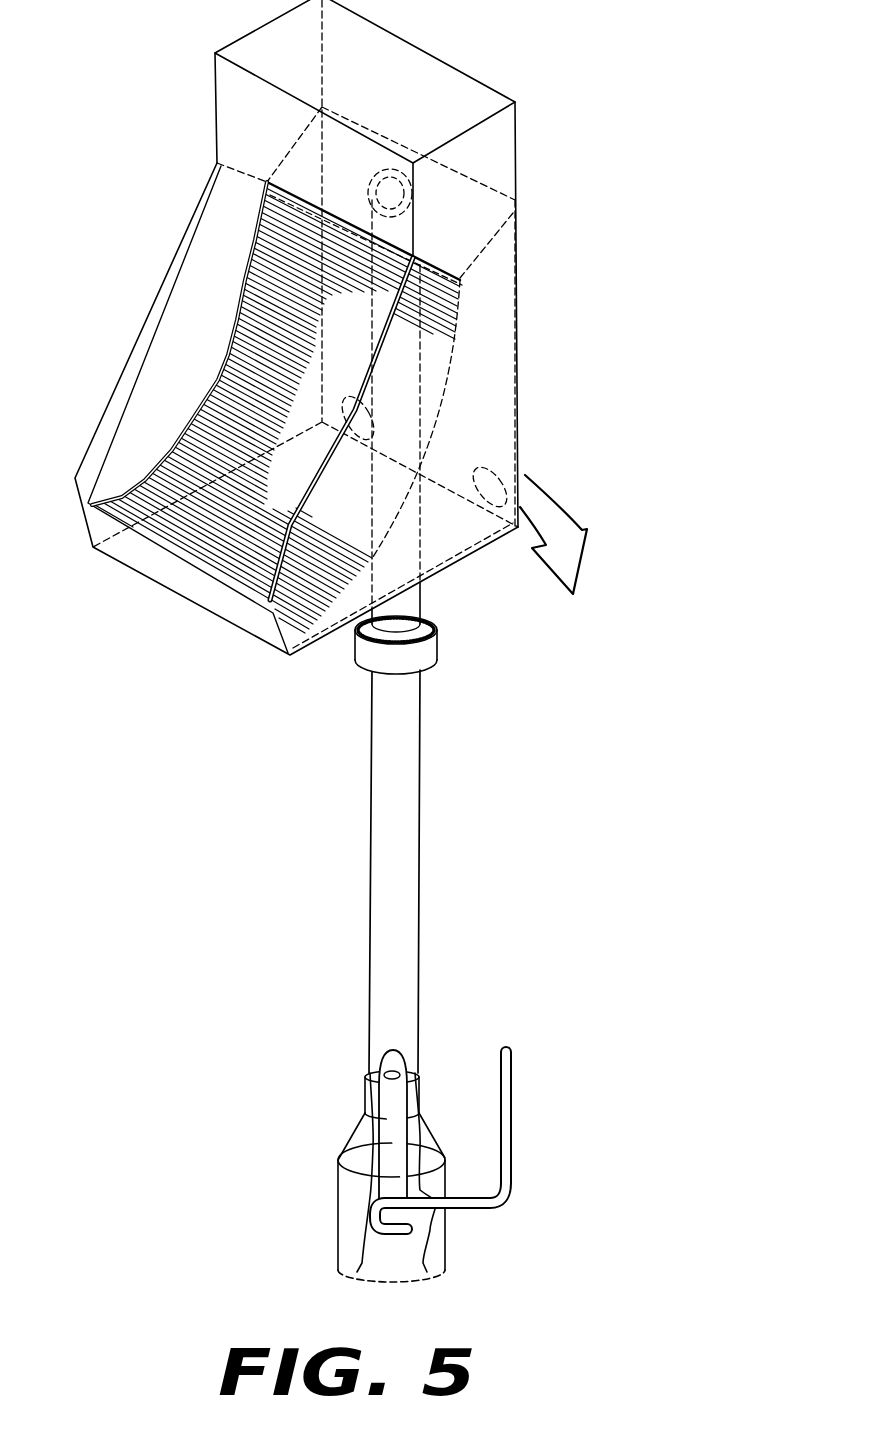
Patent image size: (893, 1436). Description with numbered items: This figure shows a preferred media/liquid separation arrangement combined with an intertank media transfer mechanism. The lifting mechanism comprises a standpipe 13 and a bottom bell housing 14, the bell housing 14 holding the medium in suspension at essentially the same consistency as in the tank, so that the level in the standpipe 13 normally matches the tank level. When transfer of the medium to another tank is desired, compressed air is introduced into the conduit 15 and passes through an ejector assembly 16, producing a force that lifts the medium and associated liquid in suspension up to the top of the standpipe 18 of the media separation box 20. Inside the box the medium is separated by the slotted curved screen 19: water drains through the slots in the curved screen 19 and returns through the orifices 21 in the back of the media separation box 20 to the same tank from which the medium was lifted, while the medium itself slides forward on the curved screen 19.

The standpipe 13 is at (418, 832).
The bottom bell housing 14 is at (343, 1177).
The conduit 15 is at (510, 1070).
The ejector assembly 16 is at (370, 1080).
The standpipe of the media separation box 18 is at (383, 190).
The slotted curved screen 19 is at (201, 407).
The media separation box 20 is at (158, 293).
The orifices 21 is at (485, 467).